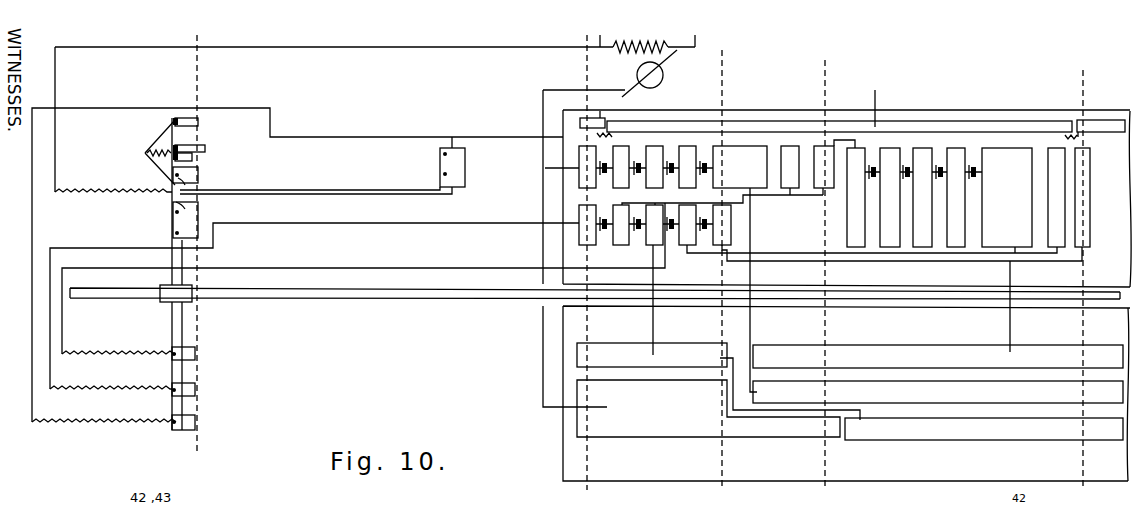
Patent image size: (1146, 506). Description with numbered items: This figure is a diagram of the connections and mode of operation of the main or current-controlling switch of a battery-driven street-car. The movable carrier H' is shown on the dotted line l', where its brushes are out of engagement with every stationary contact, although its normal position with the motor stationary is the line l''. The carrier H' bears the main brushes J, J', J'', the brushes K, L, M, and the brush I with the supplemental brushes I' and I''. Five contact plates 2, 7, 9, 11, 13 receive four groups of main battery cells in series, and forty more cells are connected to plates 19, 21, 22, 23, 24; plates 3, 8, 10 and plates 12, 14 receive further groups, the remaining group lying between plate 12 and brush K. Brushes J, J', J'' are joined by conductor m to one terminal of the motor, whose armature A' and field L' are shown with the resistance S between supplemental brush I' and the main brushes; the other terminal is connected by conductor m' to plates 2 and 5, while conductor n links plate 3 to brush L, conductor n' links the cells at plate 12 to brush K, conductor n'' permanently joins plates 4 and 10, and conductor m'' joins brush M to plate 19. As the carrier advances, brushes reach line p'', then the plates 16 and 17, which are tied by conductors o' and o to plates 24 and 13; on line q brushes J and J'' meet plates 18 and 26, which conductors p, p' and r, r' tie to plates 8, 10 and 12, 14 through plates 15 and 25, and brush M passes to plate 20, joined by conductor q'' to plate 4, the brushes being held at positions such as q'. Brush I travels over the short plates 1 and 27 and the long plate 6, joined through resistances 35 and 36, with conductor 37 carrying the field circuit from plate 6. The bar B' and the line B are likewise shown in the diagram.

The contact plate 1 is at (587, 121).
The contact plate 2 is at (570, 167).
The contact plate 3 is at (582, 225).
The plate 4 is at (652, 355).
The plate 5 is at (708, 408).
The contact plate 6 is at (839, 127).
The contact plate 7 is at (621, 167).
The contact plate 8 is at (621, 225).
The contact plate 9 is at (654, 167).
The contact plate 10 is at (654, 225).
The contact plate 11 is at (687, 167).
The contact plate 12 is at (687, 225).
The contact plate 13 is at (740, 167).
The contact plate 14 is at (722, 225).
The contact plate 15 is at (790, 167).
The plate 16 is at (938, 356).
The plate 17 is at (938, 392).
The contact plate 18 is at (834, 164).
The contact plate 19 is at (856, 197).
The plate 20 is at (984, 429).
The contact plate 21 is at (890, 197).
The contact plate 22 is at (922, 197).
The contact plate 23 is at (956, 197).
The contact plate 24 is at (1007, 197).
The contact plate 25 is at (1056, 197).
The contact plate 26 is at (1090, 197).
The contact plate 27 is at (1101, 126).
The resistance 35 is at (604, 142).
The resistance 36 is at (1061, 138).
The conductor 37 is at (884, 108).
The conductor m is at (375, 113).
The conductor m' is at (572, 248).
The conductor m'' is at (297, 265).
The conductor n is at (314, 306).
The conductor n' is at (363, 278).
The conductor n'' is at (661, 300).
The conductor o is at (754, 290).
The conductor o' is at (1016, 306).
The conductor p is at (800, 192).
The conductor p' is at (807, 202).
The position line p'' is at (731, 274).
The position line q is at (832, 279).
The position line q' is at (1092, 282).
The conductor q'' is at (790, 389).
The conductor r is at (872, 263).
The conductor r' is at (902, 264).
The position line l' is at (203, 245).
The position line l'' is at (594, 262).
The wire B is at (710, 226).
The bar B' is at (595, 304).
The carrier H' is at (169, 274).
The brush I is at (189, 122).
The supplemental brush I' is at (194, 150).
The supplemental brush I'' is at (197, 158).
The brush J is at (192, 176).
The brush J' is at (185, 220).
The brush J'' is at (322, 176).
The brush K is at (195, 353).
The brush L is at (191, 390).
The brush M is at (195, 422).
The resistance circuit S is at (158, 146).
The motor field L' is at (640, 54).
The motor armature A' is at (649, 73).